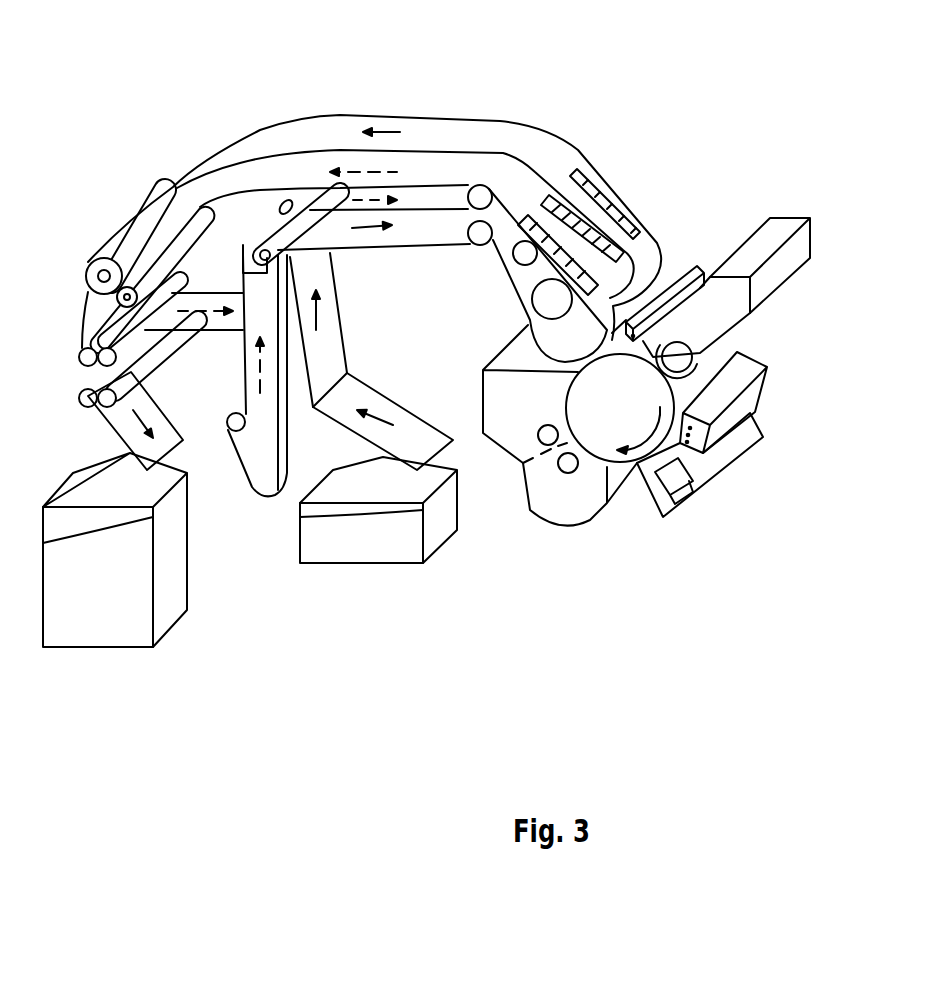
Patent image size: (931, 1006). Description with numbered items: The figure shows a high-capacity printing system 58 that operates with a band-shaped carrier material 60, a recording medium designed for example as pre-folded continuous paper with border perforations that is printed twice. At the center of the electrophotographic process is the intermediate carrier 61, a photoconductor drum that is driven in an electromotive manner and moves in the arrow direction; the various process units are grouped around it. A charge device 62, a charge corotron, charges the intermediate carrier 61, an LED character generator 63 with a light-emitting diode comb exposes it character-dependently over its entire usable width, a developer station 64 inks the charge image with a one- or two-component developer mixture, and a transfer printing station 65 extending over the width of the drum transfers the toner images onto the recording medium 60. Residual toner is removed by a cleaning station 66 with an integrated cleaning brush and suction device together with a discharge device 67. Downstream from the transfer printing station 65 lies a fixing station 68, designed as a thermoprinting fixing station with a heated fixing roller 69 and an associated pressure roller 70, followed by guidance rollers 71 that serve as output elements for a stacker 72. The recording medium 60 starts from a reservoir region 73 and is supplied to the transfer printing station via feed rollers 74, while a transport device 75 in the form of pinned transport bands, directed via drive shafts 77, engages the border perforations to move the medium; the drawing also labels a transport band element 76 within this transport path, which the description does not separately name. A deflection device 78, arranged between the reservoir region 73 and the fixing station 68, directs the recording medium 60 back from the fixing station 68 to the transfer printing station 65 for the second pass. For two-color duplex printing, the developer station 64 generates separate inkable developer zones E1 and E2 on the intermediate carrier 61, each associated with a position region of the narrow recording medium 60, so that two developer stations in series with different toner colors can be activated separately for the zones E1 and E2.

The high-capacity printing system 58 is at (487, 78).
The band-shaped carrier material 60 is at (560, 145).
The intermediate carrier 61 is at (620, 408).
The charge device 62 is at (757, 387).
The LED character generator 63 is at (737, 457).
The developer station 64 is at (522, 532).
The transfer printing station 65 is at (650, 228).
The cleaning station 66 is at (777, 232).
The discharge device 67 is at (690, 268).
The fixing station 68 is at (98, 235).
The heated fixing roller 69 is at (88, 285).
The pressure roller 70 is at (183, 248).
The guidance rollers 71 is at (78, 393).
The stacker 72 is at (186, 607).
The reservoir region 73 is at (395, 555).
The feed rollers 74 is at (250, 238).
The transport device 75 is at (600, 193).
The guide strip 76 is at (520, 282).
The drive shafts 77 is at (518, 258).
The deflection device 78 is at (252, 487).
The developer zone E1 is at (612, 340).
The developer zone E2 is at (652, 290).